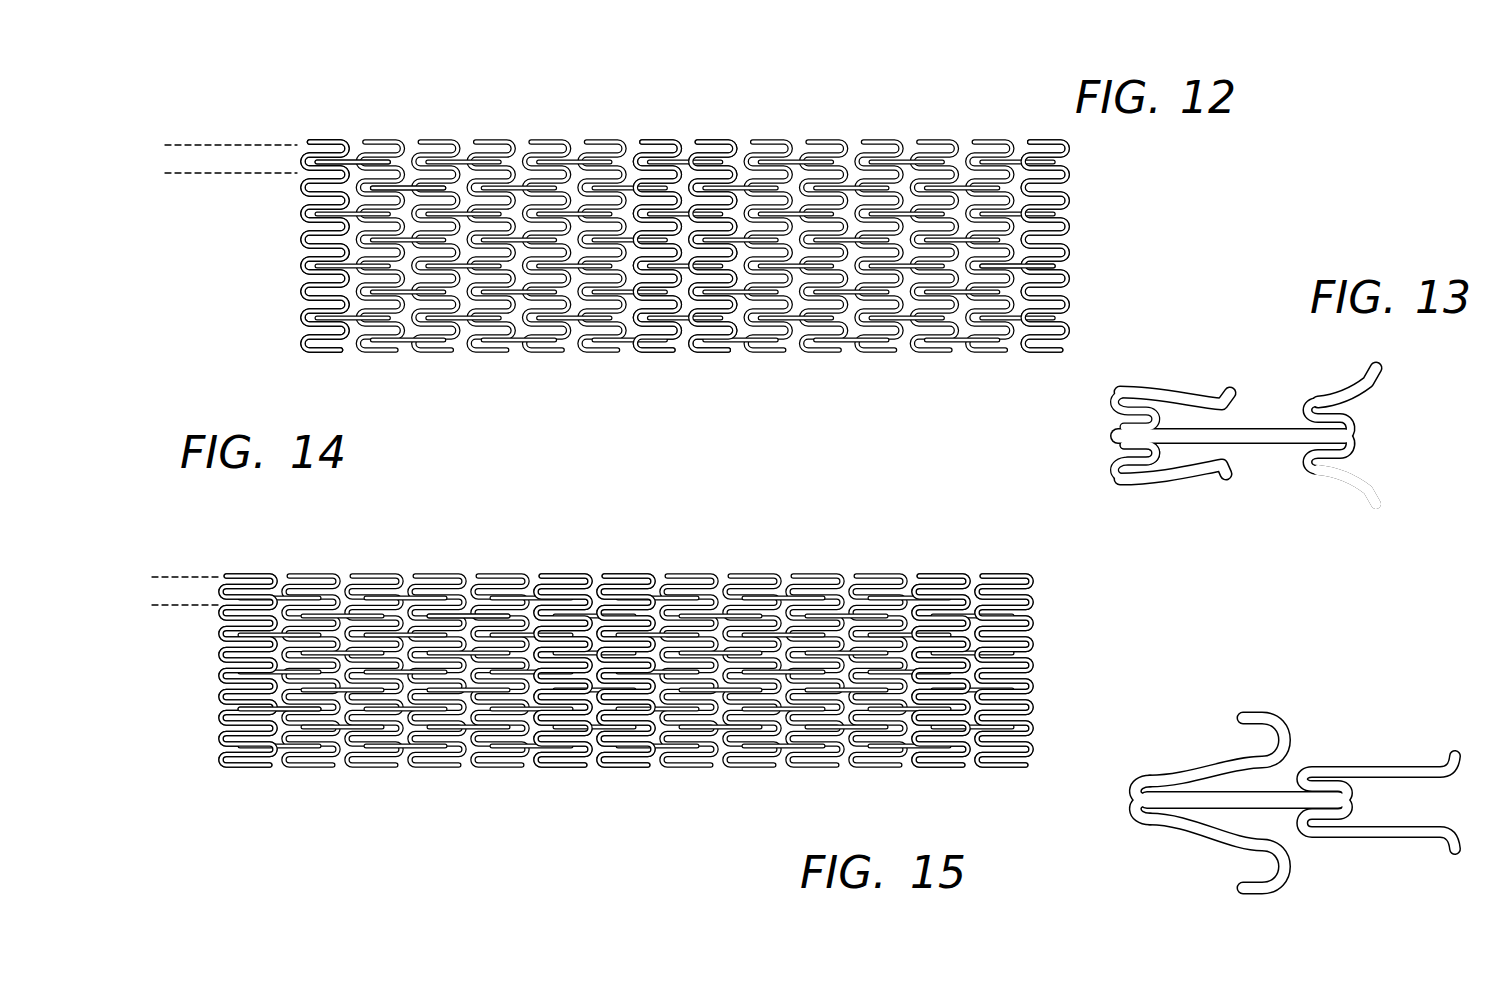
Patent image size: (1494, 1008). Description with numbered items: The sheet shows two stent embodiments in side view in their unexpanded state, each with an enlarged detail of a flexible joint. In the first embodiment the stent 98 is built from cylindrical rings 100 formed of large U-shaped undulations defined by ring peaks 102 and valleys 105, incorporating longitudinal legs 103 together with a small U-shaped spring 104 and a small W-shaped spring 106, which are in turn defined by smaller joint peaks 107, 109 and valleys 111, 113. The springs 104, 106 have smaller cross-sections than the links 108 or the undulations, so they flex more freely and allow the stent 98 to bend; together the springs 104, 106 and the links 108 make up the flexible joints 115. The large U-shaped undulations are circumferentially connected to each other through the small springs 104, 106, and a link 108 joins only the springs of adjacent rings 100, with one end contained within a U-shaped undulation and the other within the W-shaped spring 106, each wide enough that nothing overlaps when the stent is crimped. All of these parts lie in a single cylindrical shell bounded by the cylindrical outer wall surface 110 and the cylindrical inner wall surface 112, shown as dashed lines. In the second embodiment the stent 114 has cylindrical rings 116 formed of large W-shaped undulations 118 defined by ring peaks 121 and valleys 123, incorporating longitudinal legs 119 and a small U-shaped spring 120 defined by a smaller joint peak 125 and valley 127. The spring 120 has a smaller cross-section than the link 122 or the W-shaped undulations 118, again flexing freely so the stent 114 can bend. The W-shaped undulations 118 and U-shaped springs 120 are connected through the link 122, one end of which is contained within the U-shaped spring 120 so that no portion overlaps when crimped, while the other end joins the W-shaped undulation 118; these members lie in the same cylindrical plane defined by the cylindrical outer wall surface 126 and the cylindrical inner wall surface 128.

In FIG. 12, the stent 98 is at (327, 138).
In FIG. 12, the cylindrical rings 100 is at (640, 142).
In FIG. 12, the ring peaks 102 is at (1068, 176).
In FIG. 13, the longitudinal legs 103 is at (1152, 486).
In FIG. 12, the U-shaped spring 104 is at (1066, 253).
In FIG. 13, the U-shaped spring 104 is at (1350, 424).
In FIG. 12, the valleys 105 is at (300, 246).
In FIG. 12, the W-shaped spring 106 is at (302, 181).
In FIG. 13, the W-shaped spring 106 is at (1108, 452).
In FIG. 13, the joint peak 107 is at (1350, 447).
In FIG. 12, the link 108 is at (404, 165).
In FIG. 13, the link 108 is at (1275, 445).
In FIG. 13, the joint peak 109 is at (1152, 466).
In FIG. 12, the cylindrical outer wall surface 110 is at (205, 143).
In FIG. 13, the valley 111 is at (1307, 416).
In FIG. 12, the cylindrical inner wall surface 112 is at (206, 176).
In FIG. 13, the valley 113 is at (1112, 389).
In FIG. 14, the stent 114 is at (287, 568).
In FIG. 12, the flexible joints 115 is at (288, 268).
In FIG. 14, the cylindrical rings 116 is at (560, 577).
In FIG. 14, the W-shaped undulations 118 is at (226, 666).
In FIG. 15, the longitudinal legs 119 is at (1198, 842).
In FIG. 14, the U-shaped spring 120 is at (996, 588).
In FIG. 15, the U-shaped spring 120 is at (1345, 805).
In FIG. 14, the ring peaks 121 is at (1040, 670).
In FIG. 15, the ring peaks 121 is at (1293, 737).
In FIG. 14, the link 122 is at (466, 585).
In FIG. 15, the link 122 is at (1277, 813).
In FIG. 14, the valleys 123 is at (226, 721).
In FIG. 15, the valleys 123 is at (1140, 797).
In FIG. 15, the joint peak 125 is at (1347, 823).
In FIG. 14, the cylindrical outer wall surface 126 is at (187, 575).
In FIG. 15, the valley 127 is at (1292, 782).
In FIG. 14, the cylindrical inner wall surface 128 is at (176, 607).